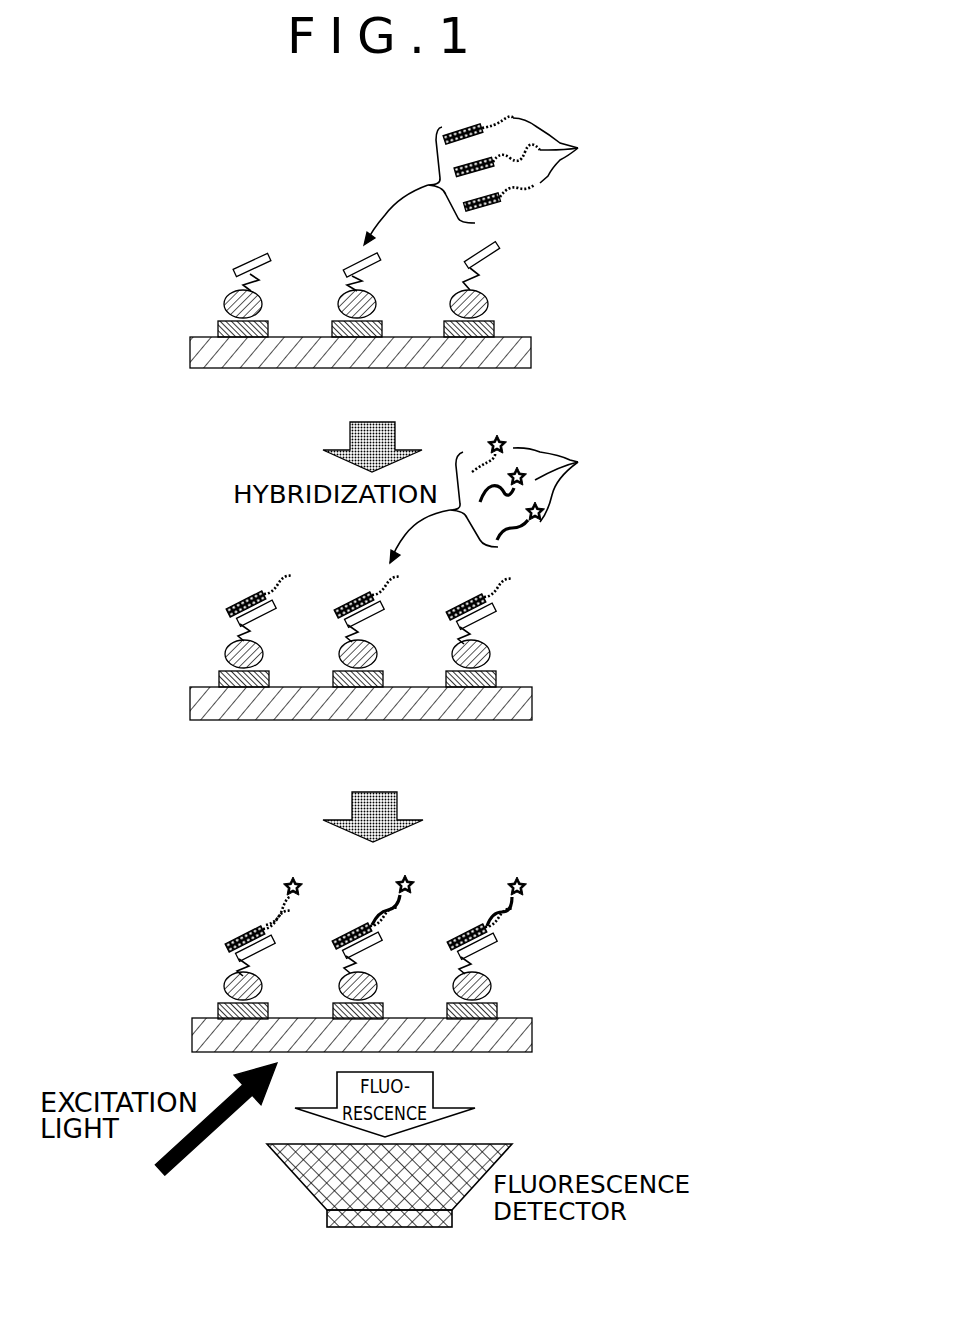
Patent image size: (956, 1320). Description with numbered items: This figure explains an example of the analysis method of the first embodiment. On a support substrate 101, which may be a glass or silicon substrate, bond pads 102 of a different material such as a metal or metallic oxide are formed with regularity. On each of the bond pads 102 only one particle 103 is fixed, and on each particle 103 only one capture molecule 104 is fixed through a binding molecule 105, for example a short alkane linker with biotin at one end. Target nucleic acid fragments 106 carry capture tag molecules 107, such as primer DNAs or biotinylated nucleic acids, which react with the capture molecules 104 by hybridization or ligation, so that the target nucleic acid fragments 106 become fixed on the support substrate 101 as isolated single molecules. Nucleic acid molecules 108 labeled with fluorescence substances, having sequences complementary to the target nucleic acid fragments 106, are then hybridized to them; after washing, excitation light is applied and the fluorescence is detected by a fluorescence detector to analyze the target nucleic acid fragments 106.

The support substrate 101 is at (192, 357).
The bond pads 102 is at (220, 330).
The particles 103 is at (222, 300).
The capture molecule 104 is at (257, 258).
The binding molecule 105 is at (258, 280).
The target nucleic acid fragments 106 is at (526, 169).
The capture tag molecules 107 is at (492, 205).
The nucleic acid molecules labeled with fluorescence substances 108 is at (537, 491).